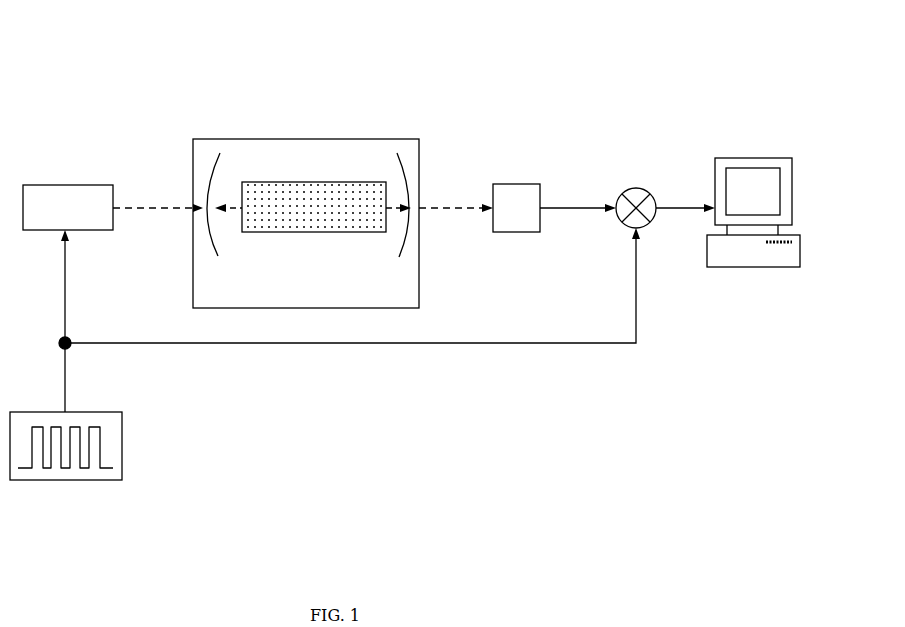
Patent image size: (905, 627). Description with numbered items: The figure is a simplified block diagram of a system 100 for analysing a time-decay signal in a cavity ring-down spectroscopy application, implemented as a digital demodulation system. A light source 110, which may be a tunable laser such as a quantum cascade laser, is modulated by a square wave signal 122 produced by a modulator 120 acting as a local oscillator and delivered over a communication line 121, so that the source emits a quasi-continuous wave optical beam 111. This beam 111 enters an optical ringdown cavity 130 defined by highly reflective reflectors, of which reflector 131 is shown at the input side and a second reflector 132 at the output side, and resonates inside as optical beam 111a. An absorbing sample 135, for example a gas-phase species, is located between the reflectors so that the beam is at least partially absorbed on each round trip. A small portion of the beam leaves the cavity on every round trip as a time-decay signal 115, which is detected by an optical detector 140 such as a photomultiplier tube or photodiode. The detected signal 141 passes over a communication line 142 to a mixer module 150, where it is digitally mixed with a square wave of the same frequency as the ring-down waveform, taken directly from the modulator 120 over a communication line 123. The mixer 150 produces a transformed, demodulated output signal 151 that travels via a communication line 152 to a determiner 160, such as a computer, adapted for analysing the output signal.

The system 100 is at (95, 92).
The light source 110 is at (93, 186).
The quasi-continuous wave optical beam 111 is at (183, 208).
The optical beam 111a is at (230, 210).
The time-decay signal 115 is at (452, 210).
The modulator 120 is at (102, 482).
The communication line 121 is at (67, 278).
The square wave signal 122 is at (42, 480).
The communication line 123 is at (193, 345).
The optical ringdown cavity 130 is at (319, 139).
The reflector 131 is at (207, 157).
The second mirror 132 is at (405, 158).
The absorbing sample 135 is at (288, 232).
The optical detector 140 is at (513, 187).
The detected signal 141 is at (570, 207).
The communication line 142 is at (552, 210).
The mixer module 150 is at (645, 190).
The transformed output signal 151 is at (683, 208).
The communication line 152 is at (685, 207).
The determiner 160 is at (790, 265).